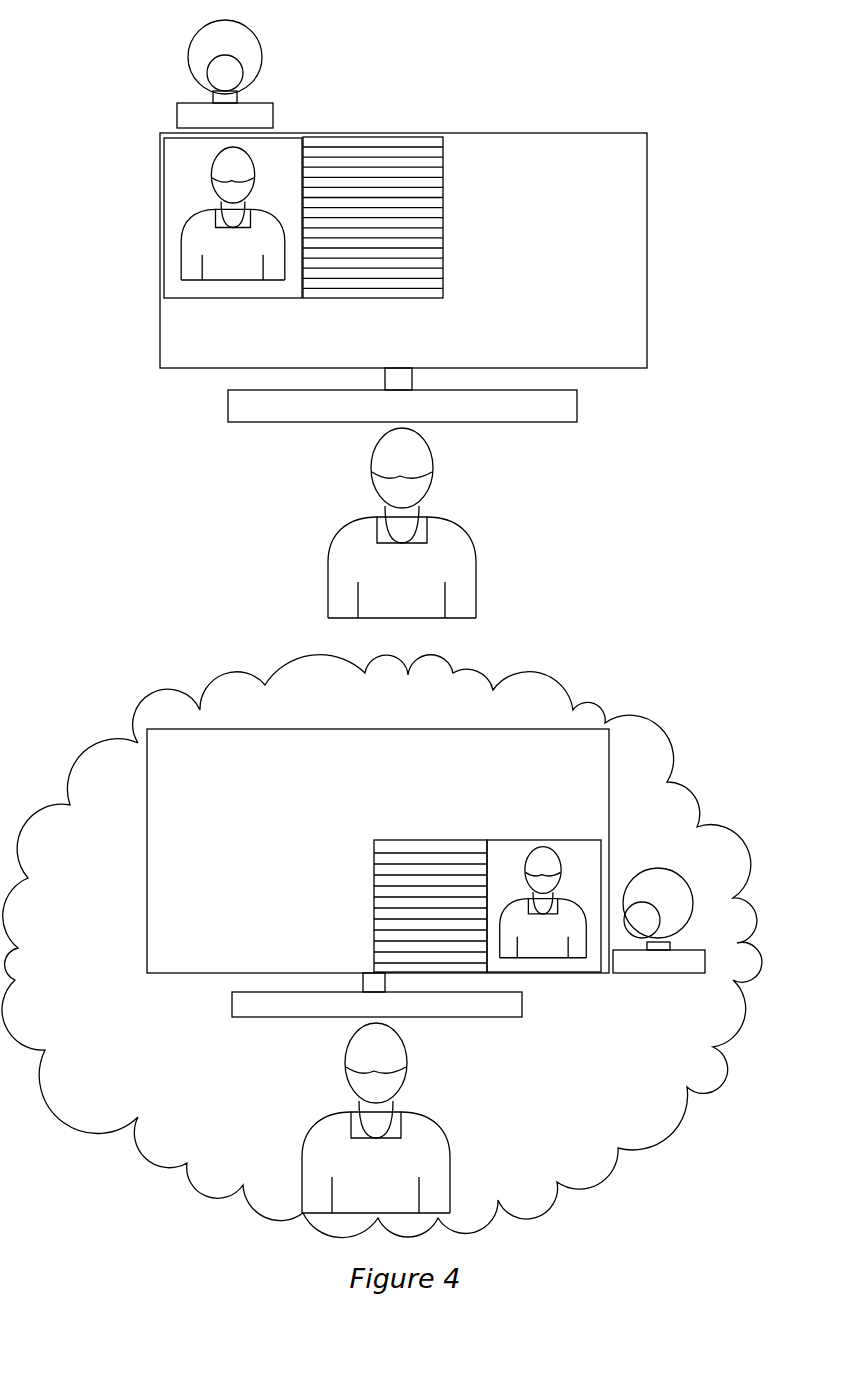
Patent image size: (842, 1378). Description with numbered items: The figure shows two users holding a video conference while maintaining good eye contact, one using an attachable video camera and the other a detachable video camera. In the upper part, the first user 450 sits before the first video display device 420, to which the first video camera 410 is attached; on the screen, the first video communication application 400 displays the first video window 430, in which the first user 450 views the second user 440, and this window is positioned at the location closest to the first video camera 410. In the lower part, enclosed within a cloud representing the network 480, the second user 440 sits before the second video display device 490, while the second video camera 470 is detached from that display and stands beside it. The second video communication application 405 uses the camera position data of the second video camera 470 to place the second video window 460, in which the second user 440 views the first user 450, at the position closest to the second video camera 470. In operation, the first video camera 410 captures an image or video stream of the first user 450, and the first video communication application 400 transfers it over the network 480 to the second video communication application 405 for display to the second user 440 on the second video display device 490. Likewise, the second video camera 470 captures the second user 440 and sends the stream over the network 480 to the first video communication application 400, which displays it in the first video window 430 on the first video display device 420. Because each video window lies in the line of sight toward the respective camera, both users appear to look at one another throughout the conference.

The video communication application-1 400 is at (443, 212).
The video communication application-2 405 is at (373, 900).
The video camera-1 410 is at (265, 103).
The video display device-1 420 is at (615, 133).
The video window-1 430 is at (187, 300).
The user-2 440 is at (187, 226).
The user-1 450 is at (465, 562).
The video window-2 460 is at (545, 840).
The video camera-2 470 is at (662, 885).
The network 480 is at (657, 732).
The video display device-2 490 is at (252, 729).